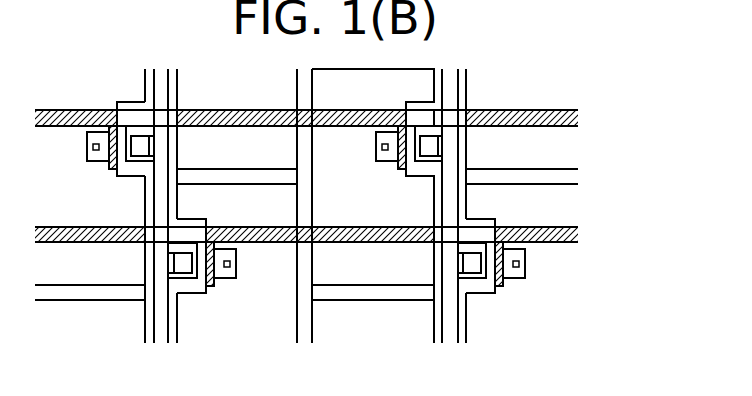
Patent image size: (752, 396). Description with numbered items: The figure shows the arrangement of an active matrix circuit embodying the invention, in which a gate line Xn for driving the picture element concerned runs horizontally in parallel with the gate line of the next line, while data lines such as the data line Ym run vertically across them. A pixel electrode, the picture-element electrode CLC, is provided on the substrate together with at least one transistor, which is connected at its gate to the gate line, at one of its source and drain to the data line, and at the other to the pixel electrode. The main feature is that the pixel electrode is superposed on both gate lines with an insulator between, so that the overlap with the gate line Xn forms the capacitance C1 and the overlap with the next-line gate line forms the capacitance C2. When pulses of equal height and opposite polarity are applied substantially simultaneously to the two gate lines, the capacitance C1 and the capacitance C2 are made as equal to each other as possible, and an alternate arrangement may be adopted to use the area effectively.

The gate line Xn is at (326, 136).
The data line Ym is at (167, 227).
The picture-element electrode CLC is at (427, 86).
The capacitance C1 is at (335, 126).
The capacitance C2 is at (347, 242).